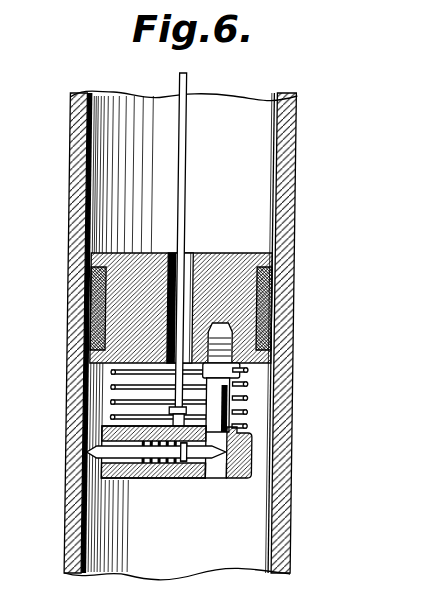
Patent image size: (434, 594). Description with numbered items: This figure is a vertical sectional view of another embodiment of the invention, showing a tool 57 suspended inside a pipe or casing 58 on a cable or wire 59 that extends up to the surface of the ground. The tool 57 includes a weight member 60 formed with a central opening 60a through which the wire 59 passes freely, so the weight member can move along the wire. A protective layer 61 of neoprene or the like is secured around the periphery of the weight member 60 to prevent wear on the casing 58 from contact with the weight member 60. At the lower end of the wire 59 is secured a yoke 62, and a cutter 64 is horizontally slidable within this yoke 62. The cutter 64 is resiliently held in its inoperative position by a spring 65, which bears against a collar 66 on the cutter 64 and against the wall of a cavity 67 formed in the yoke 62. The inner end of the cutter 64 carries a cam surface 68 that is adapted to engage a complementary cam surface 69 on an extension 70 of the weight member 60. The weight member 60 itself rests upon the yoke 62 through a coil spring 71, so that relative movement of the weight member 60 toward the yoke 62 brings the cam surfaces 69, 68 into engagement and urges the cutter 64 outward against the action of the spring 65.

The tool 57 is at (108, 359).
The casing 58 is at (285, 152).
The wire 59 is at (177, 154).
The weight member 60 is at (121, 313).
The central opening 60a is at (189, 251).
The protective layer 61 is at (277, 303).
The yoke 62 is at (137, 479).
The cutter 64 is at (105, 466).
The spring 65 is at (172, 466).
The collar 66 is at (190, 466).
The cavity 67 is at (152, 479).
The cam surface 68 is at (222, 481).
The complementary cam surface 69 is at (253, 440).
The extension 70 is at (247, 389).
The coil spring 71 is at (107, 439).